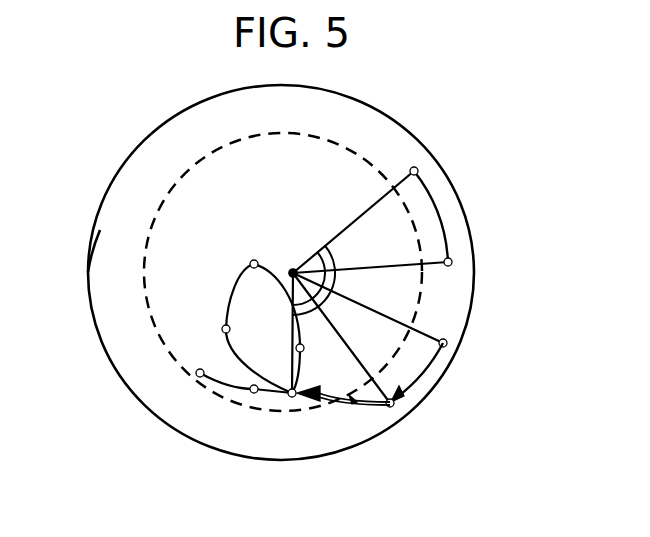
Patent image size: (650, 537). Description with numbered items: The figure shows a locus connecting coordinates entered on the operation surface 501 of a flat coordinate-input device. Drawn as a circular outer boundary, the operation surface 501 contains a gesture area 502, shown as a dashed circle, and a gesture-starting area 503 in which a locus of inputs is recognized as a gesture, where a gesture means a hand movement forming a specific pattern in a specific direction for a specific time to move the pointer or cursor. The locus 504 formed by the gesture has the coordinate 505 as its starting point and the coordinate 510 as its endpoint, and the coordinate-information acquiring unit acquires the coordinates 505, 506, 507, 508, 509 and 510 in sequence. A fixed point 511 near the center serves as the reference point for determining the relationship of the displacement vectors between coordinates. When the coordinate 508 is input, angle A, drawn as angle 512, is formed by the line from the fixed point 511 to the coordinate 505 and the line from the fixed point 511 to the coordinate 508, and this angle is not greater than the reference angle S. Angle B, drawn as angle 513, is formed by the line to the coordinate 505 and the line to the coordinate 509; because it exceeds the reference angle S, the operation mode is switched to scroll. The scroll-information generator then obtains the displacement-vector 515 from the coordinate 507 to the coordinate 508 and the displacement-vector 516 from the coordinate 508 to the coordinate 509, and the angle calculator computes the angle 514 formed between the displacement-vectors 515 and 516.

The operation surface 501 is at (112, 186).
The gesture area 502 is at (163, 203).
The gesture-starting area 503 is at (98, 258).
The locus 504 is at (432, 192).
The coordinate 505 is at (417, 168).
The coordinate 506 is at (451, 260).
The coordinate 507 is at (446, 342).
The coordinate 508 is at (394, 404).
The coordinate 509 is at (290, 396).
The coordinate 510 is at (196, 375).
The fixed point 511 is at (291, 276).
The angle A 512 is at (310, 260).
The angle B 513 is at (335, 260).
The angle 514 is at (357, 408).
The displacement-vector 515 is at (423, 370).
The displacement-vector 516 is at (332, 402).